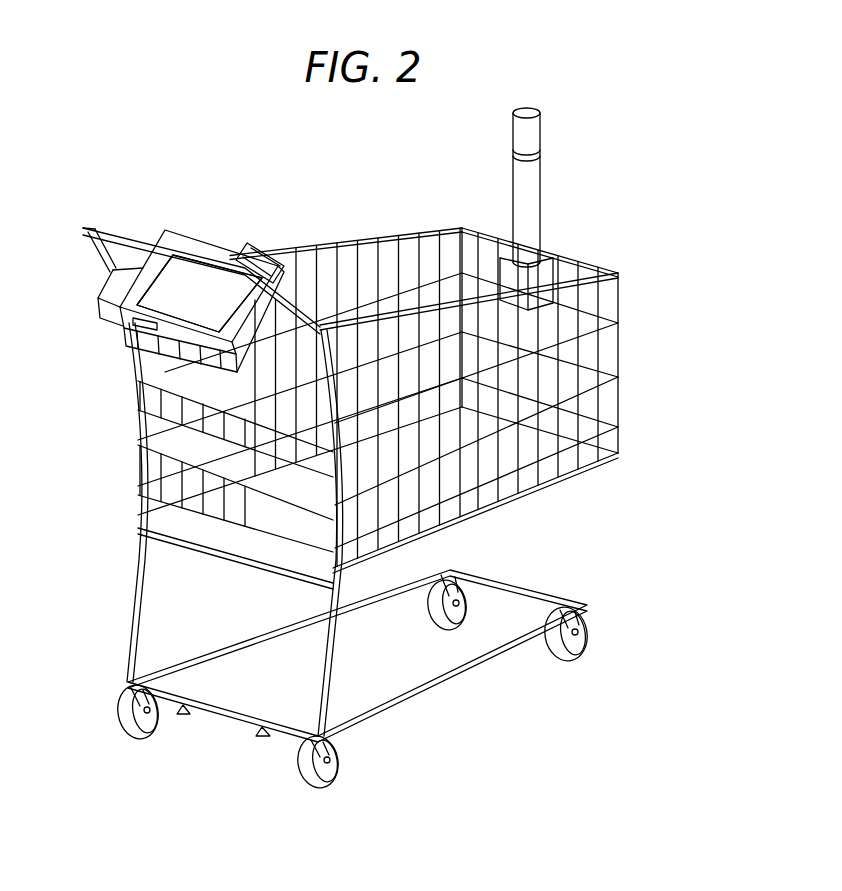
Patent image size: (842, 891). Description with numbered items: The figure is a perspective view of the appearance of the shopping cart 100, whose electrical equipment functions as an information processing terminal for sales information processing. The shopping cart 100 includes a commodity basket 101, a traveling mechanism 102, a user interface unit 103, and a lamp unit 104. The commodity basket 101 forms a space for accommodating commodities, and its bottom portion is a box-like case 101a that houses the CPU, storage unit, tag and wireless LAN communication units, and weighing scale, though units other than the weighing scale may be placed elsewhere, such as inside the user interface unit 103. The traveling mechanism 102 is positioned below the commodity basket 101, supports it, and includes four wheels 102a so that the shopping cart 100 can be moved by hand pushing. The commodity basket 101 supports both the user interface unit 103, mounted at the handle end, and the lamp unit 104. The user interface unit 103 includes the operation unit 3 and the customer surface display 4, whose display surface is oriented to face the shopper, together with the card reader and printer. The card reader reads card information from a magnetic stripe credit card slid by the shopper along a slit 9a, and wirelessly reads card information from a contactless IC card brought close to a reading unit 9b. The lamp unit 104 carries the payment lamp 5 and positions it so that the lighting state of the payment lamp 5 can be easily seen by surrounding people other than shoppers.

The shopping cart 100 is at (396, 170).
The commodity basket 101 is at (622, 353).
The case 101a is at (583, 464).
The traveling mechanism 102 is at (219, 734).
The wheels 102a is at (572, 666).
The user interface unit 103 is at (182, 217).
The operation unit 3 is at (162, 292).
The customer surface display 4 is at (199, 293).
The slit 9a is at (266, 254).
The reading unit 9b is at (98, 297).
The payment lamp 5 is at (541, 128).
The lamp unit 104 is at (566, 196).